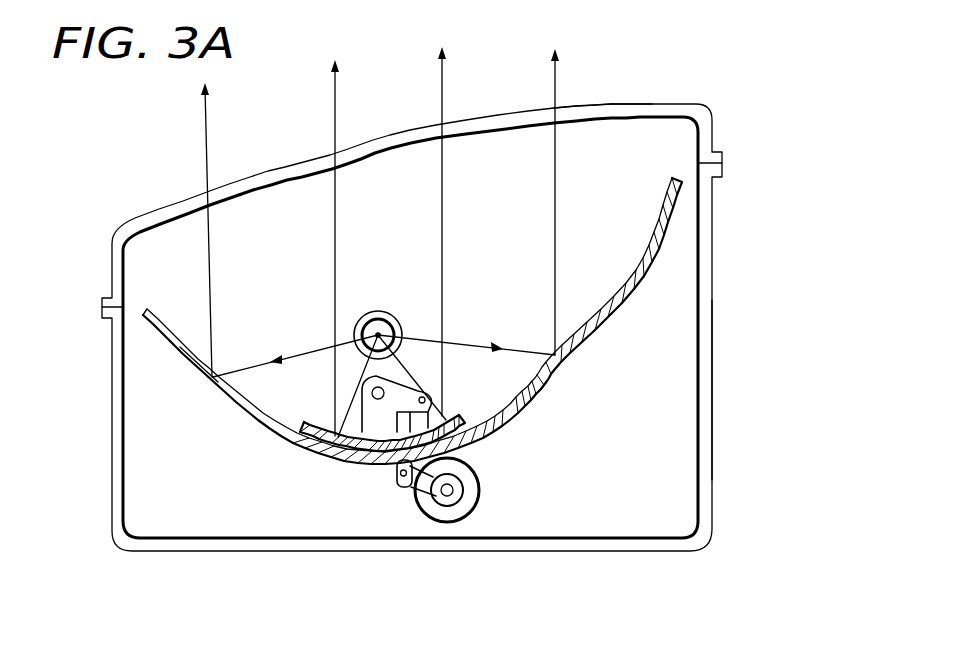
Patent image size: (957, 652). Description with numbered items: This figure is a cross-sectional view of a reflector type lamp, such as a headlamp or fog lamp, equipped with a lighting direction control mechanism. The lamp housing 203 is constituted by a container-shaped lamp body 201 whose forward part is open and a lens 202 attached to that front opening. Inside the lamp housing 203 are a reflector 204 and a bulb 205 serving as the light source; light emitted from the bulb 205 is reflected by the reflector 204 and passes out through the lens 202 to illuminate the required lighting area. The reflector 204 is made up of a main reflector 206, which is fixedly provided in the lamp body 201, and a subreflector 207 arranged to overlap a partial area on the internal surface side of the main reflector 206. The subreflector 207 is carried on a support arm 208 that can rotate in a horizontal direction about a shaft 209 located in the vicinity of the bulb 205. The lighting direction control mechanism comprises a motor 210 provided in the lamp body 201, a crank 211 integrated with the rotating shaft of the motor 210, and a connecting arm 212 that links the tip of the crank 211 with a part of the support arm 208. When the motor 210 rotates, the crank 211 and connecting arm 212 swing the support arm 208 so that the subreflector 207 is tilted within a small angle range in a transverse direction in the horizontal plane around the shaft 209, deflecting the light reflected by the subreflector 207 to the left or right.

The lamp body 201 is at (635, 543).
The lens 202 is at (645, 110).
The lamp housing 203 is at (683, 422).
The reflector 204 is at (636, 280).
The bulb 205 is at (380, 312).
The main reflector 206 is at (535, 398).
The subreflector 207 is at (300, 420).
The support arm 208 is at (372, 420).
The shaft 209 is at (386, 388).
The motor 210 is at (465, 513).
The crank 211 is at (410, 490).
The connecting arm 212 is at (395, 468).